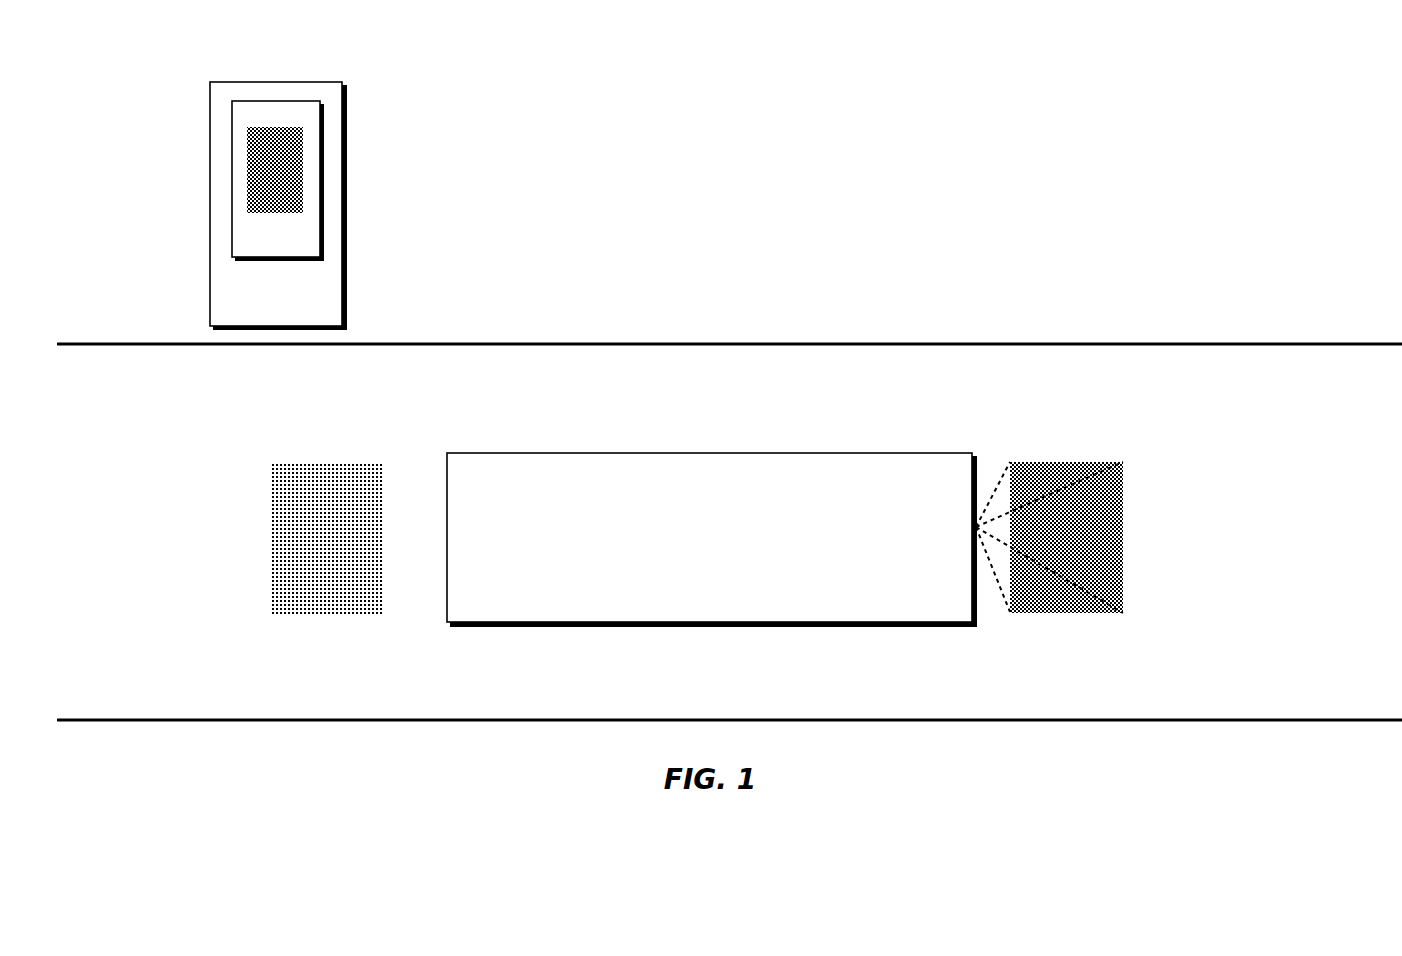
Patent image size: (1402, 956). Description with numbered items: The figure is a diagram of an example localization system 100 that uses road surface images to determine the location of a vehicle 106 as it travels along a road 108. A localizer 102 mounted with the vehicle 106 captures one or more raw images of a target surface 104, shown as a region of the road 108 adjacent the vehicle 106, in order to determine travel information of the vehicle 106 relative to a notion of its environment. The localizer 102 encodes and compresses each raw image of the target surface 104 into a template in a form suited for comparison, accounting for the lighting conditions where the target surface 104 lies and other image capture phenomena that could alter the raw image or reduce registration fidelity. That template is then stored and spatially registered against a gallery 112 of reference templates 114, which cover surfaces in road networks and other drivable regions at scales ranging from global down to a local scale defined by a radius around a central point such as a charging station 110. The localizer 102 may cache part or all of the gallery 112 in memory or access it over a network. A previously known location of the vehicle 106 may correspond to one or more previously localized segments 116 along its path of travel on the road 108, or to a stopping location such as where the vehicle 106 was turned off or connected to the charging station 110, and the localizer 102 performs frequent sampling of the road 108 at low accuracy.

The localization system 100 is at (930, 242).
The localizer 102 is at (992, 450).
The target surface 104 is at (1123, 537).
The vehicle 106 is at (695, 547).
The road 108 is at (1139, 344).
The charging station 110 is at (262, 315).
The gallery 112 is at (262, 246).
The reference templates 114 is at (303, 170).
The previously localized segments 116 is at (270, 538).